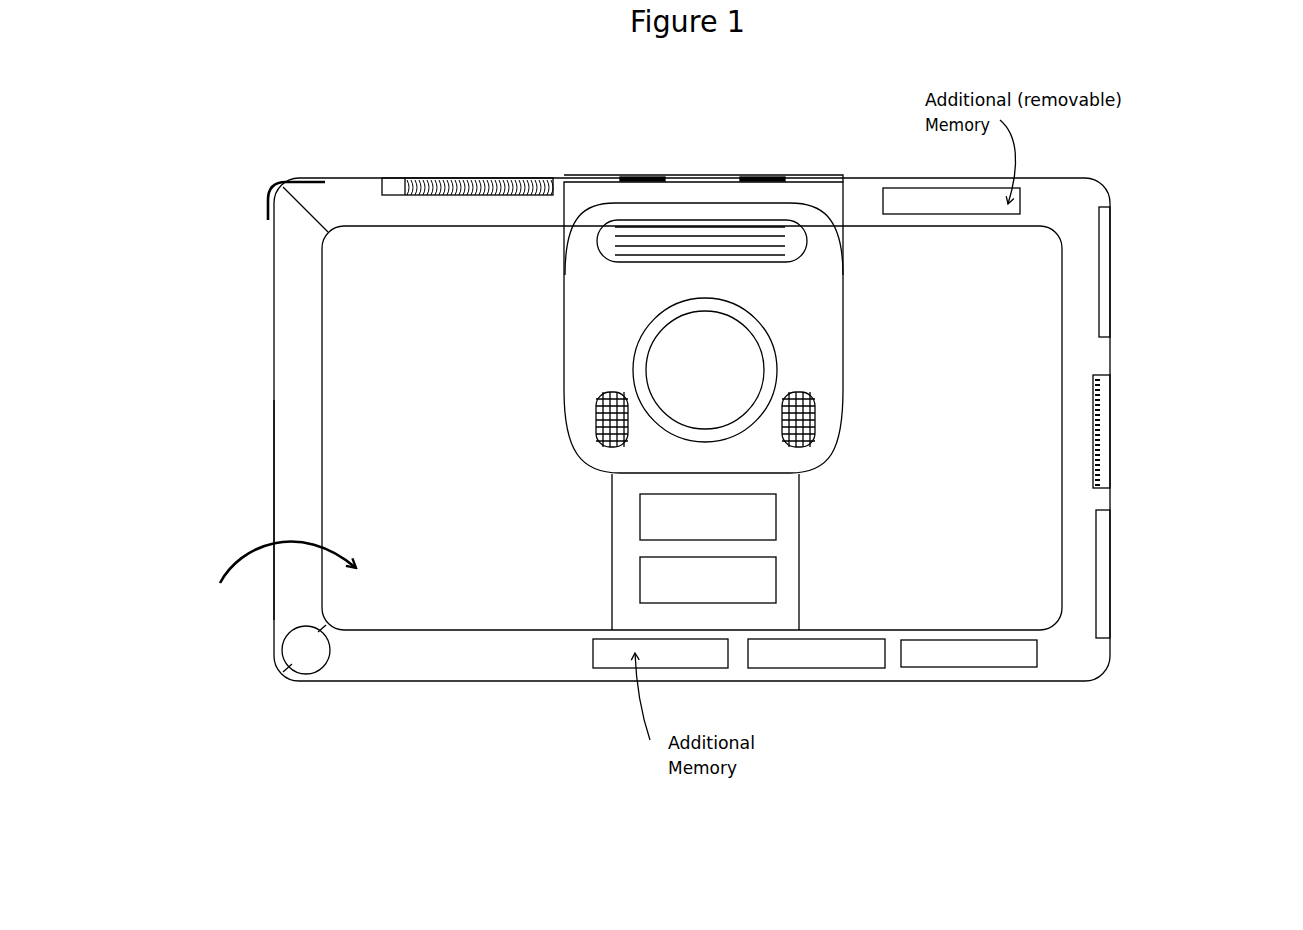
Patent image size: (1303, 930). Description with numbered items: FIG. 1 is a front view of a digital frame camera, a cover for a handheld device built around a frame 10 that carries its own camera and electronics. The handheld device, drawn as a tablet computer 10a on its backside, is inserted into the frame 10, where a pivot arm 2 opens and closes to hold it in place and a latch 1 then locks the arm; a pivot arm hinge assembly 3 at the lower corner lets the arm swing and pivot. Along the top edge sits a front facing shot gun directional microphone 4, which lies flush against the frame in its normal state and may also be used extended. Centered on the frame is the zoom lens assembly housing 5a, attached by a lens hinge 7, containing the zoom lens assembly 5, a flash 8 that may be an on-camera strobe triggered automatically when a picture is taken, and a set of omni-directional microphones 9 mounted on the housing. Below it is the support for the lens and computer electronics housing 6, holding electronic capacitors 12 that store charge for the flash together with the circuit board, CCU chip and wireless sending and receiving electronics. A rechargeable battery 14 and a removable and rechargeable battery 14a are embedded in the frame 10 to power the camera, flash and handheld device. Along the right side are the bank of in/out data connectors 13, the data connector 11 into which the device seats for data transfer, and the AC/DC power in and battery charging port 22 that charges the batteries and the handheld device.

The latch 1 is at (262, 195).
The pivot arm 2 is at (300, 410).
The pivot arm hinge assembly 3 is at (310, 655).
The shot gun directional microphone 4 is at (418, 166).
The zoom lens assembly 5 is at (788, 355).
The zoom lens assembly housing 5a is at (599, 324).
The support for the lens and computer electronics housing 6 is at (624, 528).
The lens hinge 7 is at (645, 163).
The flash 8 is at (816, 221).
The omni-directional microphones 9 is at (795, 452).
The frame 10 is at (346, 200).
The tablet computer 10a is at (245, 644).
The data connector 11 is at (1122, 397).
The electronic capacitors 12 is at (788, 543).
The bank of in/out data connectors 13 is at (1122, 256).
The rechargeable battery 14 is at (800, 653).
The removable and rechargeable battery 14a is at (968, 653).
The AC/DC power in and battery charging port 22 is at (1108, 600).